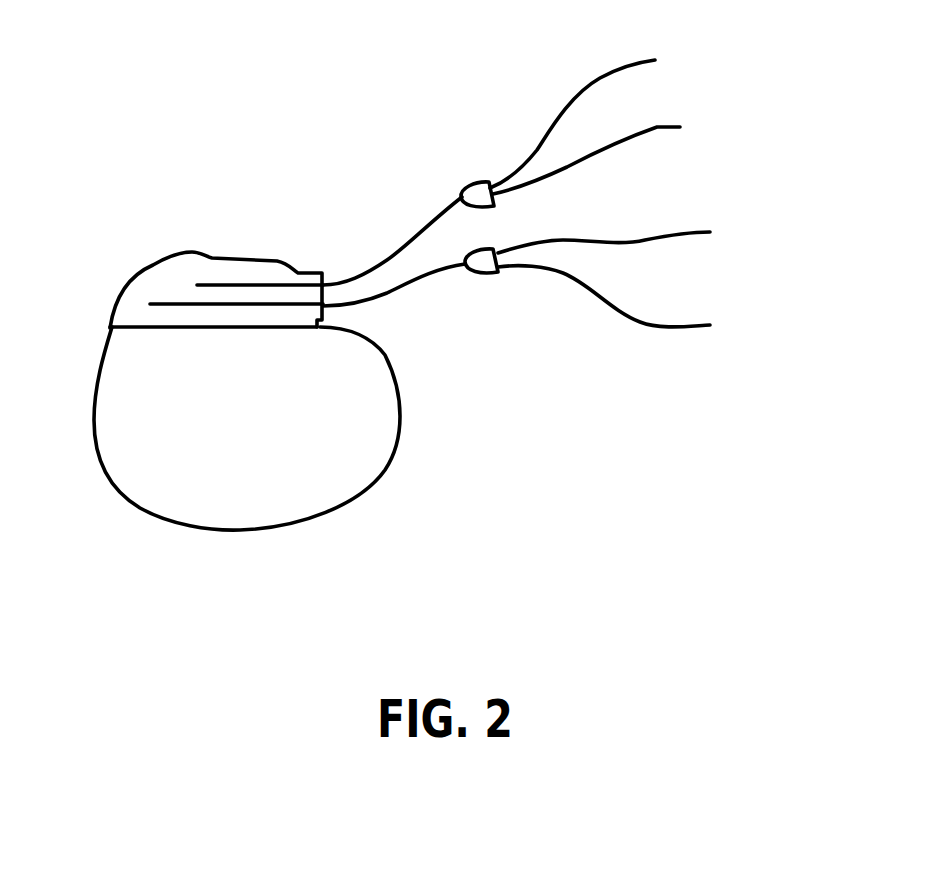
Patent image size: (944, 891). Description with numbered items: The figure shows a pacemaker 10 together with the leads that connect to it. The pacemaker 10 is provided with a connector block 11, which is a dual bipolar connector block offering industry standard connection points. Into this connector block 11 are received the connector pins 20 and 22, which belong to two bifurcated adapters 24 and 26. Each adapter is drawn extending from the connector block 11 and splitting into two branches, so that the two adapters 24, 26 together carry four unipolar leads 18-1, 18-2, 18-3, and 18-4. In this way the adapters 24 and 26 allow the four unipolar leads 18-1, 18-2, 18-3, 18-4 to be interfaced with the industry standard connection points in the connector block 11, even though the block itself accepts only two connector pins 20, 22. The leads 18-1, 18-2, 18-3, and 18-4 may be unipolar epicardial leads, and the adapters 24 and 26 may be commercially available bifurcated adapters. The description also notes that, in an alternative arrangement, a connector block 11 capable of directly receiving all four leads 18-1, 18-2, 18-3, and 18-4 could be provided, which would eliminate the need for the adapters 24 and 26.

The pacemaker 10 is at (147, 517).
The connector block 11 is at (112, 312).
The connector pin 20 is at (162, 303).
The connector pin 22 is at (245, 285).
The IS-1 to bifurcated adapter 24 is at (408, 287).
The IS-1 to bifurcated adapter 26 is at (415, 232).
The unipolar lead 18-1 is at (607, 83).
The unipolar lead 18-2 is at (655, 127).
The unipolar lead 18-3 is at (680, 233).
The unipolar lead 18-4 is at (677, 325).